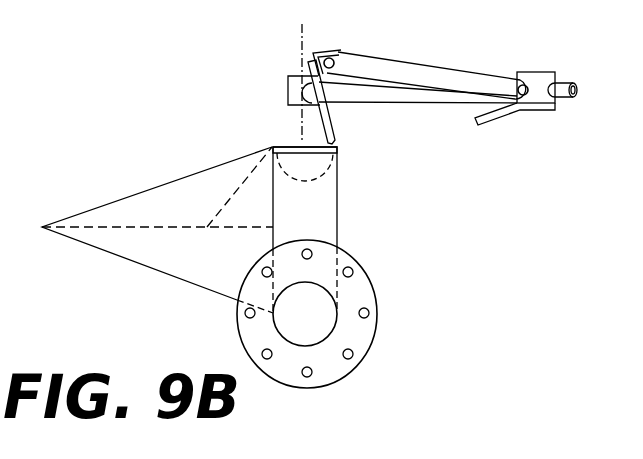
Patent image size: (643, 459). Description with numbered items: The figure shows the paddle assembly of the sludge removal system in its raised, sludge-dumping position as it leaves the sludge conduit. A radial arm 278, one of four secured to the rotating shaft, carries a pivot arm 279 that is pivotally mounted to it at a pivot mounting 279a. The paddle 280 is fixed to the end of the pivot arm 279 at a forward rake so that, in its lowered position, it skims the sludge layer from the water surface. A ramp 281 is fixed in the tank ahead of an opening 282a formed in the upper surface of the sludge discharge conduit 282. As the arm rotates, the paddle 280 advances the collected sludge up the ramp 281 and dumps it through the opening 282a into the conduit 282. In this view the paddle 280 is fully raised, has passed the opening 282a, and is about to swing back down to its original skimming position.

The radial arm 278 is at (415, 103).
The pivot arm 279 is at (435, 70).
The pivot mounting 279a is at (527, 84).
The paddle 280 is at (333, 127).
The ramp 281 is at (177, 180).
The sludge discharge conduit 282 is at (338, 228).
The opening 282a is at (272, 146).